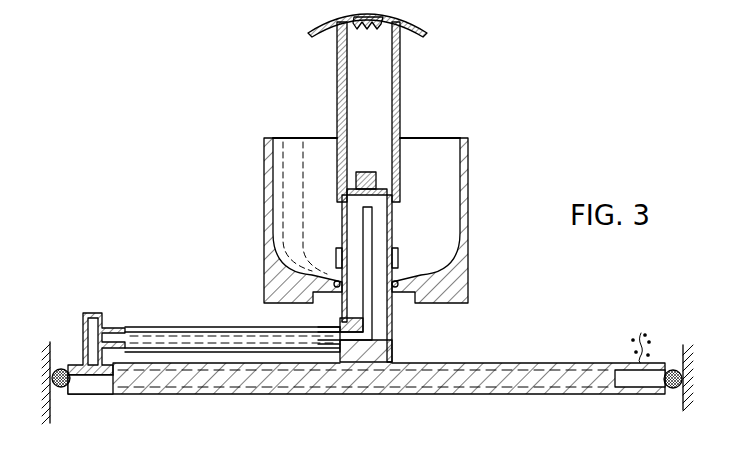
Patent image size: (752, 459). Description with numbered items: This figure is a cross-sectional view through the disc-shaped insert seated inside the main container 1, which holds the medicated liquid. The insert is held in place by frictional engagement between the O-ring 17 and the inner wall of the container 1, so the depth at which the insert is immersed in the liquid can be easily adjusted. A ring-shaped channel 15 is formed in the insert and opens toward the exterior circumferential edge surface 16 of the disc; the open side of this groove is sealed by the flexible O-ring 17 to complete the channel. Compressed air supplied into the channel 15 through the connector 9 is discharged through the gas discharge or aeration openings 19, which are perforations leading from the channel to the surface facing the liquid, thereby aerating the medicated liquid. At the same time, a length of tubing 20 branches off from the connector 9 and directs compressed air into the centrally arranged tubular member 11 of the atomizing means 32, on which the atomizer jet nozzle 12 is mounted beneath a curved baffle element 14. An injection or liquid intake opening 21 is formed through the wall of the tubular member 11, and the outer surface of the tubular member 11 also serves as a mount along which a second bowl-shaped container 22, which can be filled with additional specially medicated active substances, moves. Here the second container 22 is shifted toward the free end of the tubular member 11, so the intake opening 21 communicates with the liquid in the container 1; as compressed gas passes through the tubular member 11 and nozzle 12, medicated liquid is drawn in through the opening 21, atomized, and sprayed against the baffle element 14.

The container 1 is at (50, 404).
The connector 9 is at (85, 313).
The tubular member 11 is at (392, 314).
The atomizer jet nozzle 12 is at (377, 181).
The curved baffle element 14 is at (427, 34).
The ring-shaped channel 15 is at (93, 380).
The exterior circumferential edge surface 16 is at (66, 388).
The O-ring 17 is at (62, 368).
The gas discharge or aeration openings 19 is at (641, 336).
The tubing 20 is at (175, 327).
The injection or liquid intake opening 21 is at (338, 312).
The second bowl-shaped container 22 is at (468, 246).
The atomizing means 32 is at (361, 214).